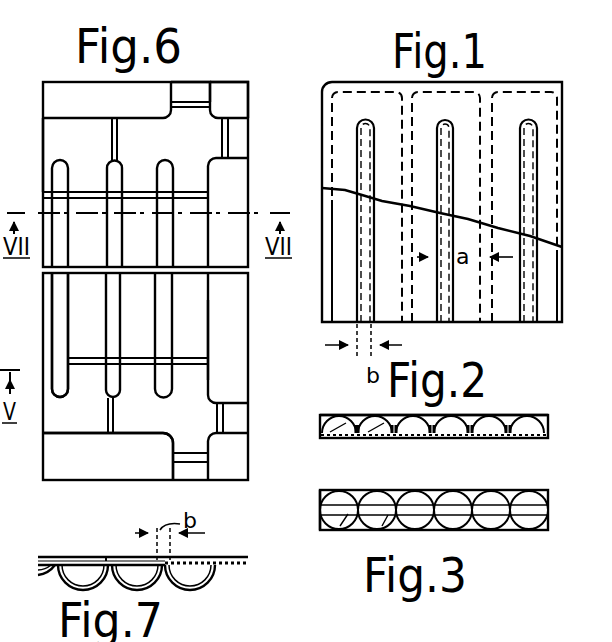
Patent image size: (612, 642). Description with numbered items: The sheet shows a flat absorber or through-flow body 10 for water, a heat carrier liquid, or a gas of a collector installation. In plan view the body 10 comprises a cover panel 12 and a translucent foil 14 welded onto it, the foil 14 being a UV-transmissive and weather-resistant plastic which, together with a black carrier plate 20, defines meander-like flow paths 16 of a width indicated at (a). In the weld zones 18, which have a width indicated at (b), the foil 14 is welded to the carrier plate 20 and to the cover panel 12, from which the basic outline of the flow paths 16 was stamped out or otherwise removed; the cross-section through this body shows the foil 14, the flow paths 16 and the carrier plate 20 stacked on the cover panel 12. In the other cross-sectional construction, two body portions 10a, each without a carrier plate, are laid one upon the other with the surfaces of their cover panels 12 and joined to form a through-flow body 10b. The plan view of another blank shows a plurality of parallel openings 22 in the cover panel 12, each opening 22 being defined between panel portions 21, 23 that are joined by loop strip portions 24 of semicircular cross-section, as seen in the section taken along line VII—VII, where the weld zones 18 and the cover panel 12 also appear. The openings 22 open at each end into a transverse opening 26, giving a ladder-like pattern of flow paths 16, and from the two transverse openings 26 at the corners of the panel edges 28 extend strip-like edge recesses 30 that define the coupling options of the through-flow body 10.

In FIG. 1, the through-flow body 10 is at (320, 335).
In FIG. 2, the through-flow body 10 is at (312, 405).
In FIG. 3, the body portion 10a is at (522, 570).
In FIG. 3, the through-flow body 10b is at (312, 526).
In FIG. 7, the cover panel 12 is at (222, 557).
In FIG. 1, the cover panel 12 is at (402, 252).
In FIG. 2, the cover panel 12 is at (490, 414).
In FIG. 1, the translucent foil 14 is at (347, 170).
In FIG. 2, the translucent foil 14 is at (355, 418).
In FIG. 1, the flow path 16 is at (546, 308).
In FIG. 2, the flow path 16 is at (407, 432).
In FIG. 3, the flow path 16 is at (370, 522).
In FIG. 7, the weld zone 18 is at (108, 548).
In FIG. 1, the weld zone 18 is at (530, 122).
In FIG. 1, the carrier plate 20 is at (478, 123).
In FIG. 2, the carrier plate 20 is at (322, 437).
In FIG. 6, the panel portion 21 is at (239, 352).
In FIG. 6, the opening 22 is at (187, 320).
In FIG. 6, the panel portion 23 is at (122, 475).
In FIG. 6, the loop strip portion 24 is at (220, 137).
In FIG. 7, the loop strip portion 24 is at (195, 587).
In FIG. 6, the transverse opening 26 is at (62, 145).
In FIG. 6, the panel edge 28 is at (252, 98).
In FIG. 6, the edge recess 30 is at (188, 95).